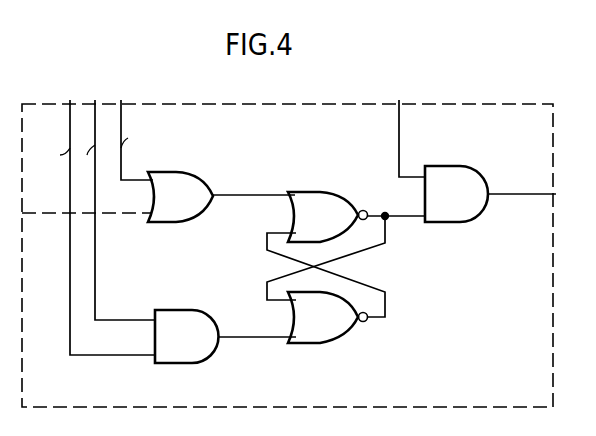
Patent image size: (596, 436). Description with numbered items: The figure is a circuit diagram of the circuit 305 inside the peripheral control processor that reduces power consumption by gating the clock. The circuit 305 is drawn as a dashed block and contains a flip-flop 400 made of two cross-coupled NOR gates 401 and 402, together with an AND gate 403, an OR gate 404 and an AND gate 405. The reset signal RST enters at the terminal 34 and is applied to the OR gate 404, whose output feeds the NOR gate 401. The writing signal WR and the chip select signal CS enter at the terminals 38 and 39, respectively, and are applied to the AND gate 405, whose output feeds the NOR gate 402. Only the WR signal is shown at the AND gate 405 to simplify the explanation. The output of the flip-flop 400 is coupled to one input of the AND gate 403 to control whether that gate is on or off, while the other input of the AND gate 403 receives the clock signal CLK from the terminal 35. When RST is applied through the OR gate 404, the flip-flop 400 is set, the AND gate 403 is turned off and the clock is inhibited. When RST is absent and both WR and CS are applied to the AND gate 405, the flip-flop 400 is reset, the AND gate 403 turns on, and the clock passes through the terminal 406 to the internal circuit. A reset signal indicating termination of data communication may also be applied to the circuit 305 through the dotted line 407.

The terminal 34 is at (141, 132).
The terminal 35 is at (414, 129).
The terminal 38 is at (96, 219).
The terminal 39 is at (114, 202).
The circuit 305 is at (468, 103).
The flip-flop 400 is at (285, 178).
The NOR gate 401 is at (335, 192).
The NOR gate 402 is at (313, 345).
The AND gate 403 is at (455, 223).
The OR gate 404 is at (194, 222).
The AND gate 405 is at (202, 362).
The terminal 406 is at (520, 193).
The dotted line 407 is at (52, 214).